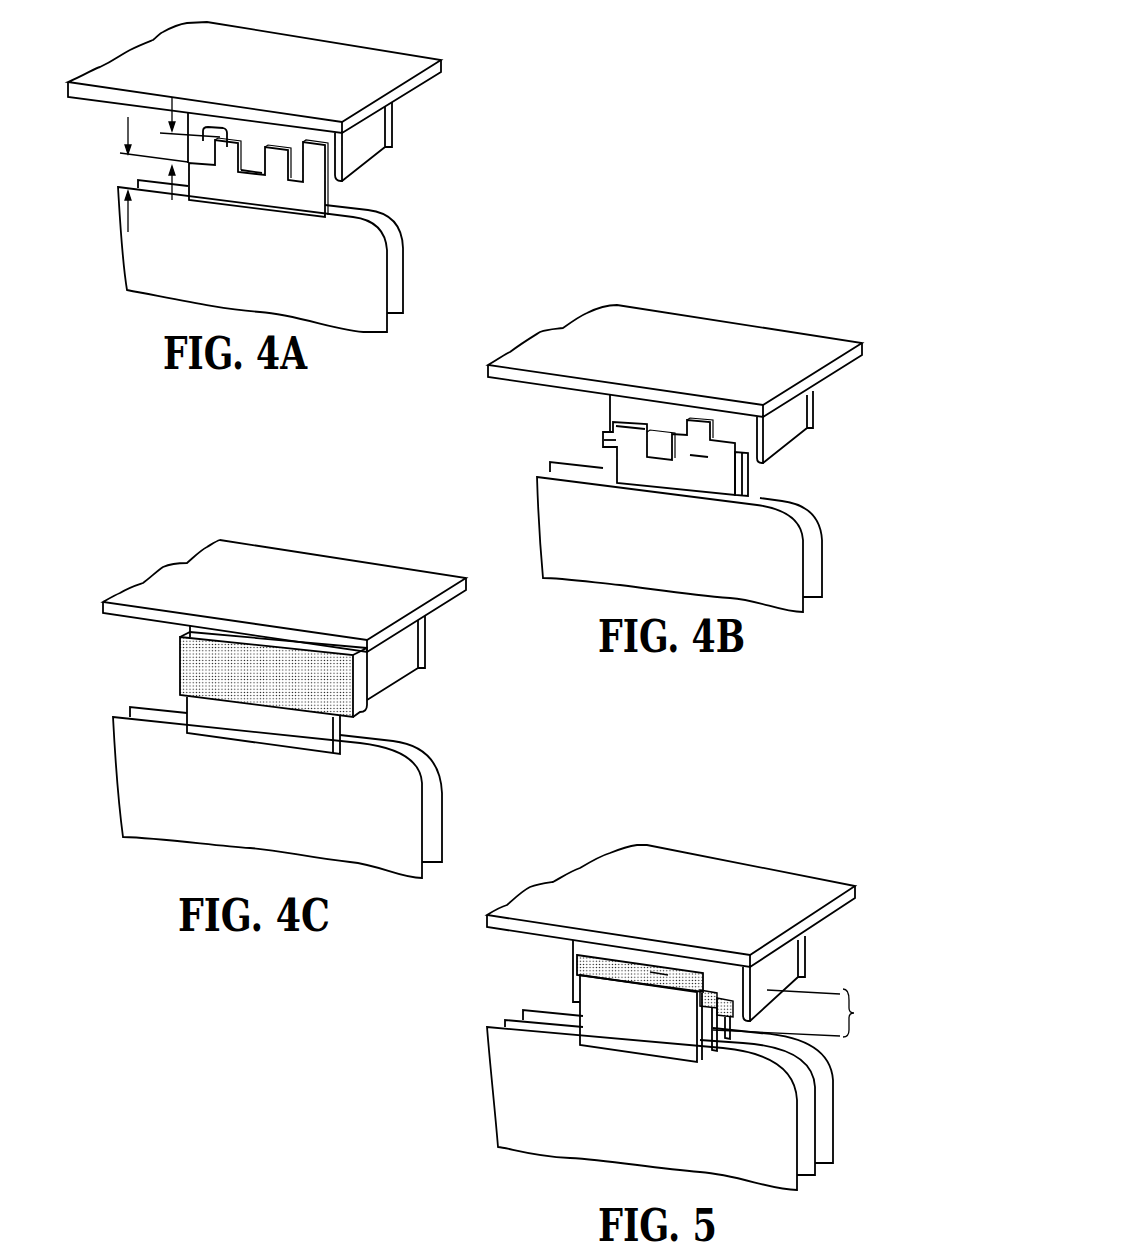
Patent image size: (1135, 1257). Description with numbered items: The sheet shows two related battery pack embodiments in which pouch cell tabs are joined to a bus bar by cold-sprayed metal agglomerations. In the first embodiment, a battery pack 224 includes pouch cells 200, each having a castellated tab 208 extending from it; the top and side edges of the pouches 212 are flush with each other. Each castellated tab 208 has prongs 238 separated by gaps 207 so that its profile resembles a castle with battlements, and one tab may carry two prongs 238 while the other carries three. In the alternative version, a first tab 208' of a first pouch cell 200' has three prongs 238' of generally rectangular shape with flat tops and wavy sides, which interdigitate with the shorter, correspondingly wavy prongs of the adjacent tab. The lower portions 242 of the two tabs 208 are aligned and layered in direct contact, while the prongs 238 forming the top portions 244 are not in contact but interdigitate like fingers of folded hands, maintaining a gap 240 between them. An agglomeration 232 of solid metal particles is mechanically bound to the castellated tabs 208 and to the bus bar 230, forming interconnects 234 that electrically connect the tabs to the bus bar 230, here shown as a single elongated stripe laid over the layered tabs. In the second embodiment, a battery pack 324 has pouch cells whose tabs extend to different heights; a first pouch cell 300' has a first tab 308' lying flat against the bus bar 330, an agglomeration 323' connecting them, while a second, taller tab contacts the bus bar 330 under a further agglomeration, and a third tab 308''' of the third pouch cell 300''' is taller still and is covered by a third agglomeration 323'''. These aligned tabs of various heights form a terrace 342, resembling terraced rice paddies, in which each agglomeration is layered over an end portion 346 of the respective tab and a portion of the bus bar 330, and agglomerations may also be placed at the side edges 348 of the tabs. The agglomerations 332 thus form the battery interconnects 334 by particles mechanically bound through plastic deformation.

In FIG. 4A, the pouch cell 200 is at (304, 284).
In FIG. 4C, the pouch cell 200 is at (326, 792).
In FIG. 4B, the first pouch cell 200' is at (735, 555).
In FIG. 4A, the gap 207 is at (246, 163).
In FIG. 4A, the castellated tab 208 is at (308, 136).
In FIG. 4C, the castellated tab 208 is at (267, 755).
In FIG. 4B, the first tab 208' is at (800, 475).
In FIG. 4A, the pouch 212 is at (360, 313).
In FIG. 4A, the battery pack 224 is at (95, 210).
In FIG. 4B, the battery pack 224 is at (505, 487).
In FIG. 4C, the battery pack 224 is at (95, 742).
In FIG. 4A, the bus bar 230 is at (360, 80).
In FIG. 4C, the bus bar 230 is at (423, 640).
In FIG. 4C, the agglomeration 232 is at (218, 673).
In FIG. 4C, the interconnect 234 is at (187, 667).
In FIG. 4A, the prong 238 is at (205, 101).
In FIG. 4B, the prong 238' is at (685, 386).
In FIG. 4B, the gap 240 is at (703, 463).
In FIG. 4A, the lower portion 242 is at (120, 220).
In FIG. 4A, the top portion 244 is at (180, 208).
In FIG. 5, the first pouch cell 300' is at (688, 1111).
In FIG. 5, the pouch cell 300''' is at (708, 1108).
In FIG. 5, the first tab 308' is at (682, 1072).
In FIG. 5, the third tab 308''' is at (615, 1030).
In FIG. 5, the agglomeration 323' is at (742, 966).
In FIG. 5, the third agglomeration 323''' is at (665, 942).
In FIG. 5, the battery pack 324 is at (450, 1030).
In FIG. 5, the bus bar 330 is at (610, 955).
In FIG. 5, the agglomeration 332 is at (570, 966).
In FIG. 5, the interconnect 334 is at (580, 968).
In FIG. 5, the terrace 342 is at (801, 1005).
In FIG. 5, the end portion 346 is at (592, 982).
In FIG. 5, the side edge 348 is at (570, 1012).